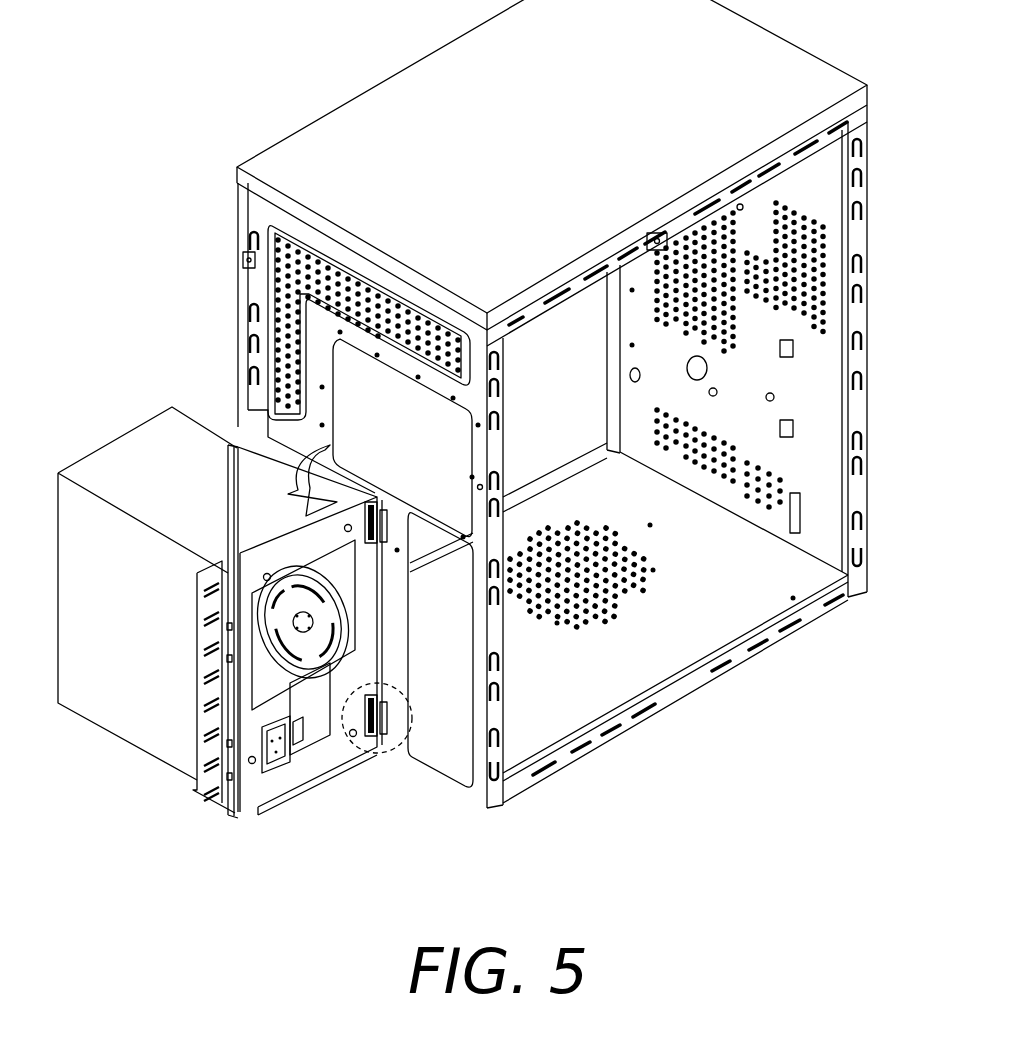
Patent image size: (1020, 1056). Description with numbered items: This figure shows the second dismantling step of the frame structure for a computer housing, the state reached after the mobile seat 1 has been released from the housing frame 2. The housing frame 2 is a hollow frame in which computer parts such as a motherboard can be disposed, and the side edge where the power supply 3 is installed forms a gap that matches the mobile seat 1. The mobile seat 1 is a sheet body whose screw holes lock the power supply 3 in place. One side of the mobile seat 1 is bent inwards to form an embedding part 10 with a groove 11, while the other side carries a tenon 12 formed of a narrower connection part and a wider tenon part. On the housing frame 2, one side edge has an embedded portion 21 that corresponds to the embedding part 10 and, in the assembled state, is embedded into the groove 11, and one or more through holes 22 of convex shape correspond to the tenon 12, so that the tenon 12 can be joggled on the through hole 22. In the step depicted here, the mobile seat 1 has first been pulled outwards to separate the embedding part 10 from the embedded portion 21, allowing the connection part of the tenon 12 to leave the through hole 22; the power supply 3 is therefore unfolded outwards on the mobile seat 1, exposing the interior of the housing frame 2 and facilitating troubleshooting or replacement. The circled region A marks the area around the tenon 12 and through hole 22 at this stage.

The mobile seat 1 is at (243, 800).
The embedding part 10 is at (230, 498).
The groove 11 is at (228, 447).
The tenon 12 is at (367, 690).
The housing frame 2 is at (755, 695).
The embedded portion 21 is at (247, 348).
The through hole 22 is at (383, 720).
The power supply 3 is at (165, 747).
The detail region A is at (377, 742).